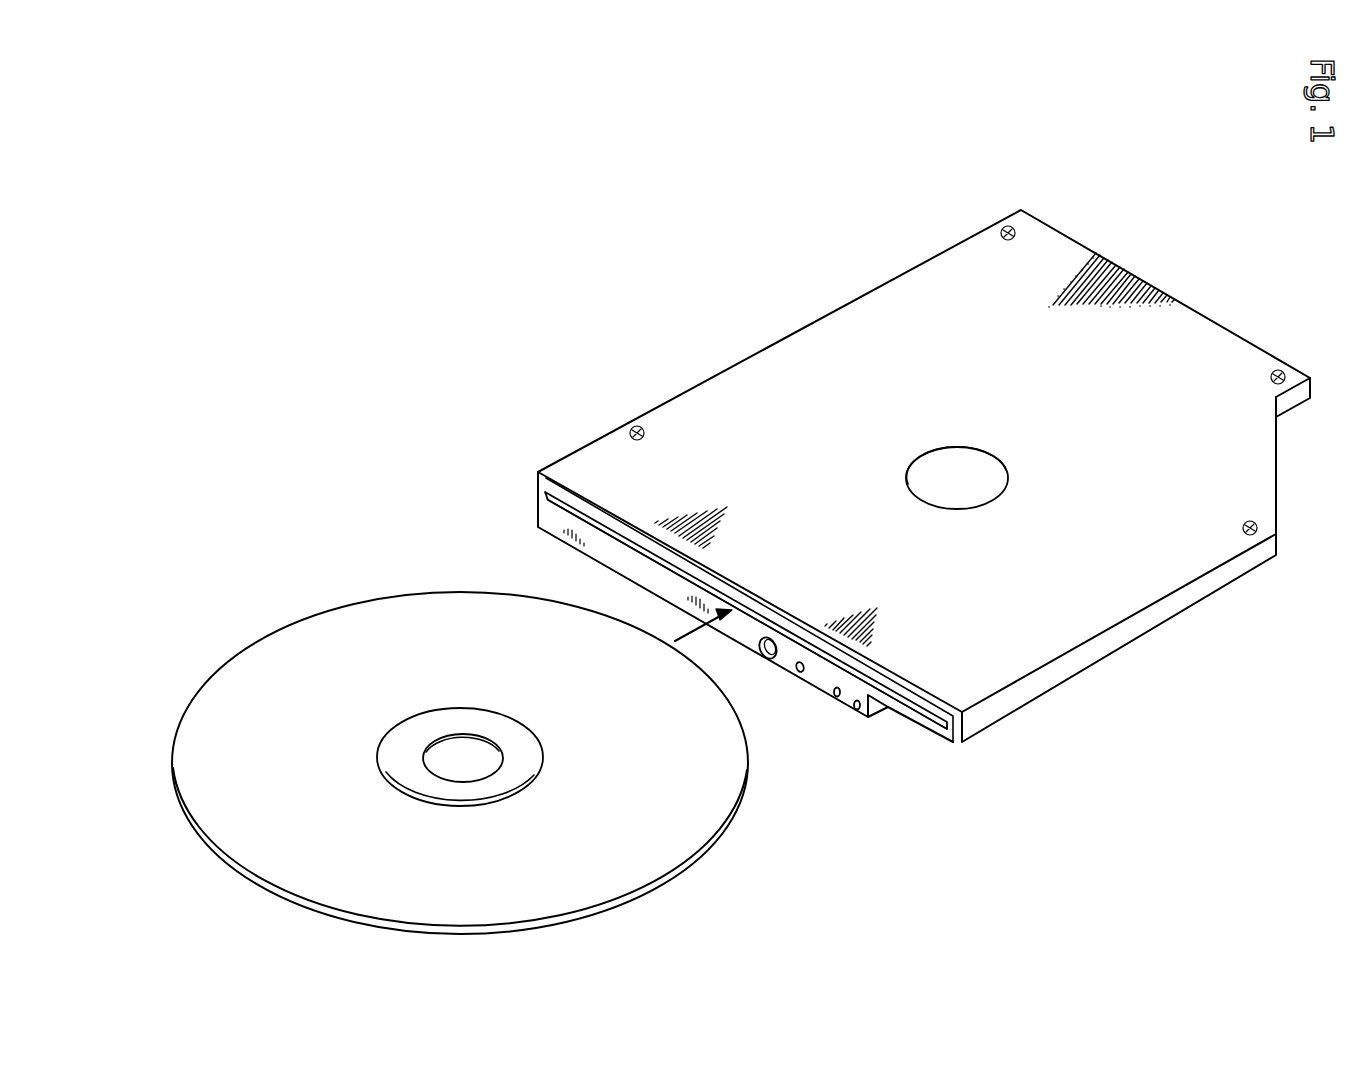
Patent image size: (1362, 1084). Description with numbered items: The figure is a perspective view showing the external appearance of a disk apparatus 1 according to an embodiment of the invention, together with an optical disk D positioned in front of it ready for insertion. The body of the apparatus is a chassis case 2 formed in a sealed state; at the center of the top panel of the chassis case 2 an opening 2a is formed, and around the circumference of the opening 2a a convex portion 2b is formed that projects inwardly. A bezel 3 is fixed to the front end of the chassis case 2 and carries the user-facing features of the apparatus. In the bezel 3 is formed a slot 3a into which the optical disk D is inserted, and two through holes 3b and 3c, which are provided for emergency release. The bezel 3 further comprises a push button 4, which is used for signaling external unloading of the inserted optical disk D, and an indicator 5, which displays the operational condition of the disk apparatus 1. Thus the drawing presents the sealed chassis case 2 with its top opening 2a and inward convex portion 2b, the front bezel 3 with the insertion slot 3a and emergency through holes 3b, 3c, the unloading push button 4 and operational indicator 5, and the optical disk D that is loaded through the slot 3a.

The disk apparatus 1 is at (741, 353).
The chassis case 2 is at (1243, 332).
The opening 2a is at (952, 480).
The convex portion 2b is at (1013, 476).
The bezel 3 is at (607, 552).
The slot 3a is at (758, 617).
The through hole 3b is at (835, 700).
The through hole 3c is at (857, 713).
The push button 4 is at (764, 660).
The indicator 5 is at (798, 680).
The optical disk D is at (343, 638).